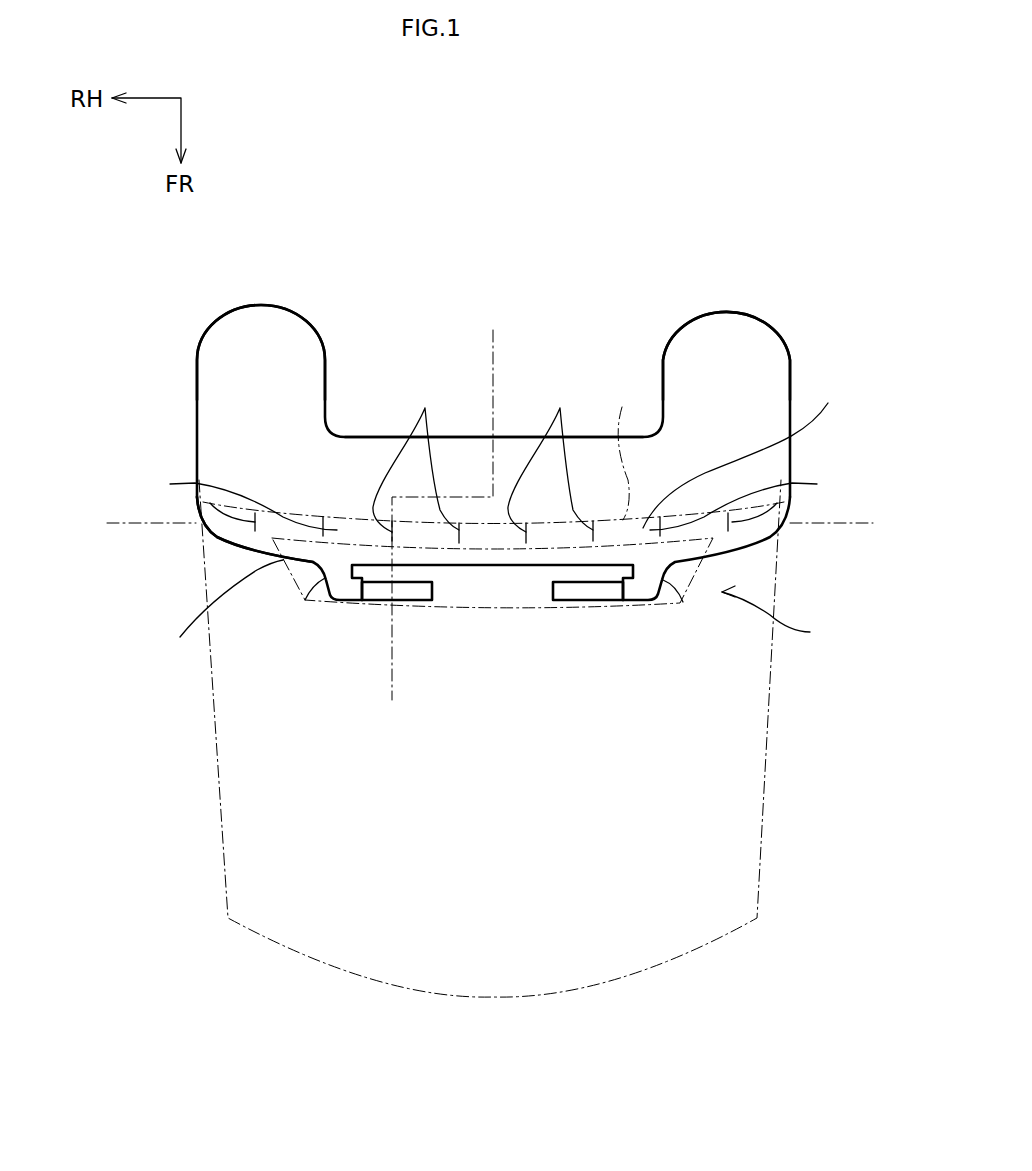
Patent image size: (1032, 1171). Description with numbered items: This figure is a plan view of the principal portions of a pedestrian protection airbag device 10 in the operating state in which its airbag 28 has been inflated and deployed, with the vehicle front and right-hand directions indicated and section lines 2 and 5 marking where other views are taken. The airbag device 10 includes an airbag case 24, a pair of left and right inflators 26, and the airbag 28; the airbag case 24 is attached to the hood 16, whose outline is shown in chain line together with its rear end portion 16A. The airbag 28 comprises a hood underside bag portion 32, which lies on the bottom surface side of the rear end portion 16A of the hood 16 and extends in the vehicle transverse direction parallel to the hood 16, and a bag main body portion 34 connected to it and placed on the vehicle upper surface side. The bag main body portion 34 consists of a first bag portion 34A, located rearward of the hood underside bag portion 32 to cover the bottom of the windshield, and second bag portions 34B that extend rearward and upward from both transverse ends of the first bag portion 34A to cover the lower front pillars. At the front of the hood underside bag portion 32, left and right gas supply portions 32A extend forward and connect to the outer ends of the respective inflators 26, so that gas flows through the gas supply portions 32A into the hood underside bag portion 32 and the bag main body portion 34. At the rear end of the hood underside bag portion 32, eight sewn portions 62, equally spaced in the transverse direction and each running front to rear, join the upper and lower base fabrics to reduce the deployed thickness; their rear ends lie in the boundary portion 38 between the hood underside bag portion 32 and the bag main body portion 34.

The section line 2- 2 is at (396, 693).
The section line 5- 5 is at (868, 527).
The airbag device 10 is at (784, 615).
The hood 16 is at (216, 743).
The rear end portion of the hood 16A is at (747, 459).
The airbag case 24 is at (231, 549).
The inflators 26 is at (413, 603).
The airbag 28 is at (177, 465).
The hood underside bag portion 32 is at (494, 531).
The gas supply portions 32A is at (305, 598).
The bag main body portion 34 is at (461, 381).
The first bag portion 34A is at (376, 437).
The second bag portions 34B is at (306, 319).
The boundary portion 38 is at (620, 451).
The sewn portions 62 is at (494, 462).